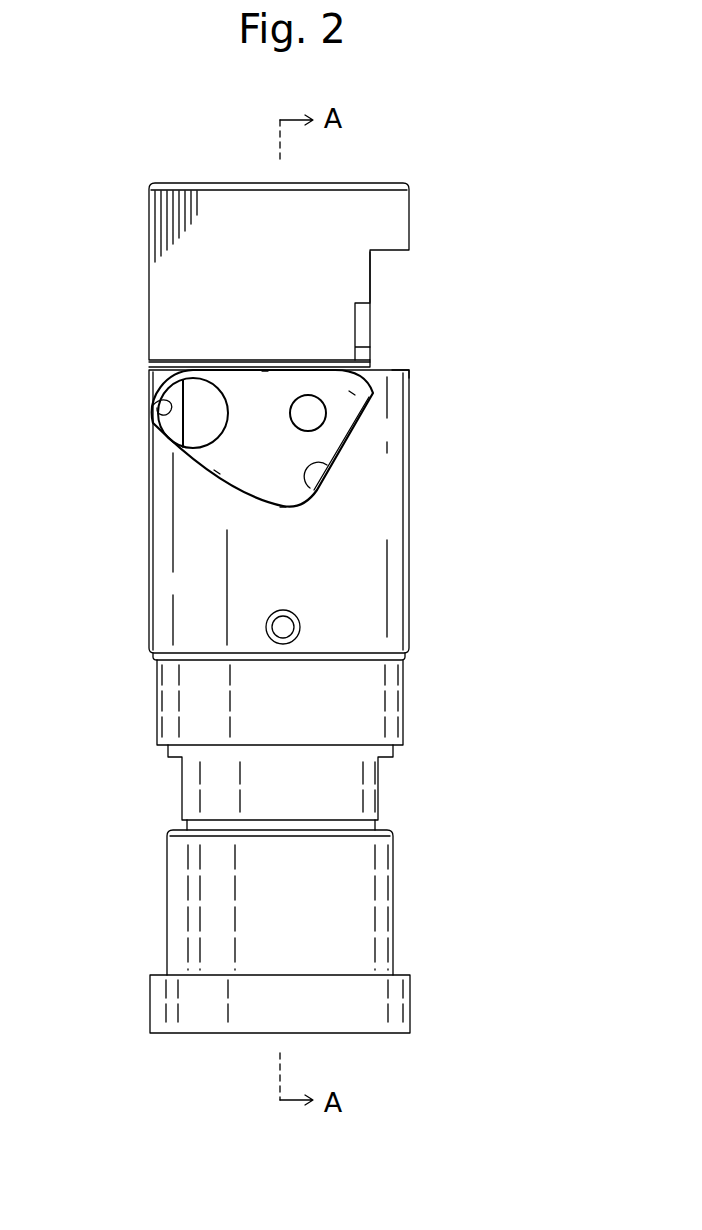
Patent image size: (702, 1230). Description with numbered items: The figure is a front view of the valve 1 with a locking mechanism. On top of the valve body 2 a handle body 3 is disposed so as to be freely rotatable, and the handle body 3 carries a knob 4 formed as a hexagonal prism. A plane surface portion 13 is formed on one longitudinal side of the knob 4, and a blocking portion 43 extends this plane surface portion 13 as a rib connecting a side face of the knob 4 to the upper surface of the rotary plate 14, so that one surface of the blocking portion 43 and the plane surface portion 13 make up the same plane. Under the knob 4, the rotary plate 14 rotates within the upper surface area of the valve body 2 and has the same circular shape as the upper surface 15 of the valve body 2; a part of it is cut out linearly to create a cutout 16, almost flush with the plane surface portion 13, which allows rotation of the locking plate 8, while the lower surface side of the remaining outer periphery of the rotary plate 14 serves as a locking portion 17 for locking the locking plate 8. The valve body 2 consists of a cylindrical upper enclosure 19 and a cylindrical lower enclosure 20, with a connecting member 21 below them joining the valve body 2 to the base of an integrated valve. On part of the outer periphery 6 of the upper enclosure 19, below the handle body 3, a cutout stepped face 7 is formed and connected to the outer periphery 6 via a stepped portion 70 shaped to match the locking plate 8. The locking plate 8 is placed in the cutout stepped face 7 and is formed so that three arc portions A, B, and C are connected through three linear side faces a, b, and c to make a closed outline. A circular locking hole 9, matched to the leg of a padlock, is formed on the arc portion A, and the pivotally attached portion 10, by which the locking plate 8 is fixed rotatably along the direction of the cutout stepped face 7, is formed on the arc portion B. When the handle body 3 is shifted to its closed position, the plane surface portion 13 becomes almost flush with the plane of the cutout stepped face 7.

The valve 1 is at (466, 186).
The valve body 2 is at (475, 591).
The handle body 3 is at (138, 227).
The knob 4 is at (337, 207).
The outer periphery 6 is at (358, 622).
The cutout stepped face 7 is at (197, 423).
The locking plate 8 is at (200, 462).
The locking hole 9 is at (152, 394).
The pivotally attached portion 10 is at (316, 413).
The plane surface portion 13 is at (372, 297).
The rotary plate 14 is at (183, 363).
The upper surface 15 is at (398, 363).
The cutout 16 is at (373, 360).
The locking portion 17 is at (247, 373).
The upper enclosure 19 is at (188, 609).
The lower enclosure 20 is at (358, 702).
The connecting member 21 is at (368, 1003).
The blocking portion 43 is at (362, 330).
The stepped portion 70 is at (315, 495).
The arc portion A is at (153, 405).
The arc portion B is at (352, 393).
The arc portion C is at (283, 510).
The linear side face a is at (320, 458).
The linear side face b is at (217, 472).
The linear side face c is at (265, 373).